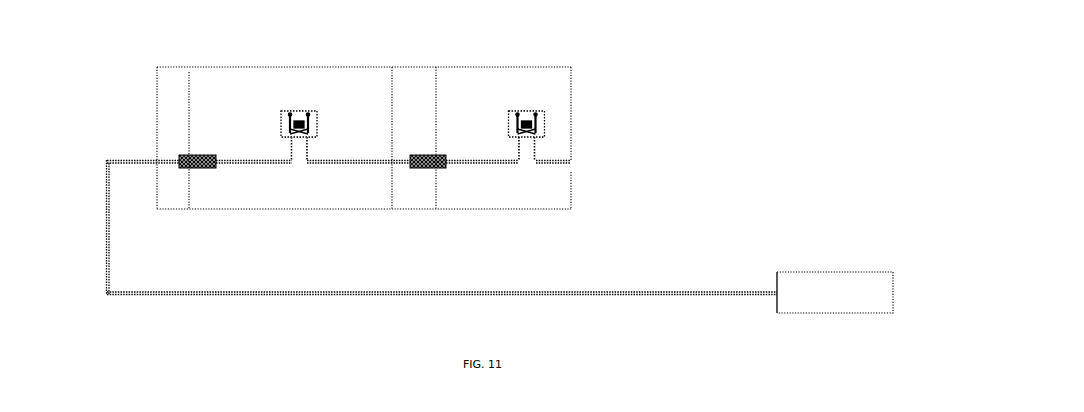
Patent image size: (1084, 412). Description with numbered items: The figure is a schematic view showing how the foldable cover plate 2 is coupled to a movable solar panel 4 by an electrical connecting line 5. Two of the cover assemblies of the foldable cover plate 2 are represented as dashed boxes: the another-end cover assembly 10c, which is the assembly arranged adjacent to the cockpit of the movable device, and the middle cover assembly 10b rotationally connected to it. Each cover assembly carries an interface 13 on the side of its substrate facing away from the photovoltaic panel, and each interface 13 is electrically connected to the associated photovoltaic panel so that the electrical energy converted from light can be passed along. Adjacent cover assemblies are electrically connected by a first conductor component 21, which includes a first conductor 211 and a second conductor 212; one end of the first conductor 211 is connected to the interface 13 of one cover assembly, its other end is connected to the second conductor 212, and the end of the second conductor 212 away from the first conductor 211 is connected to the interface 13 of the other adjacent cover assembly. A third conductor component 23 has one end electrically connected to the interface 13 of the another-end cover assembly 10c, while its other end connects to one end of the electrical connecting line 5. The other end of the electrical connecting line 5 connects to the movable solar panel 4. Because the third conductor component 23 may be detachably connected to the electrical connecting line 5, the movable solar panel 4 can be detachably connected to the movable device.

The foldable cover plate 2 is at (364, 113).
The another-end cover assembly 10c is at (224, 88).
The middle cover assembly 10b is at (533, 85).
The interface 13 is at (297, 112).
The first conductor component 21 is at (340, 224).
The first conductor 211 is at (350, 164).
The second conductor 212 is at (482, 211).
The third conductor component 23 is at (235, 164).
The electrical connecting line 5 is at (647, 292).
The movable solar panel 4 is at (825, 295).